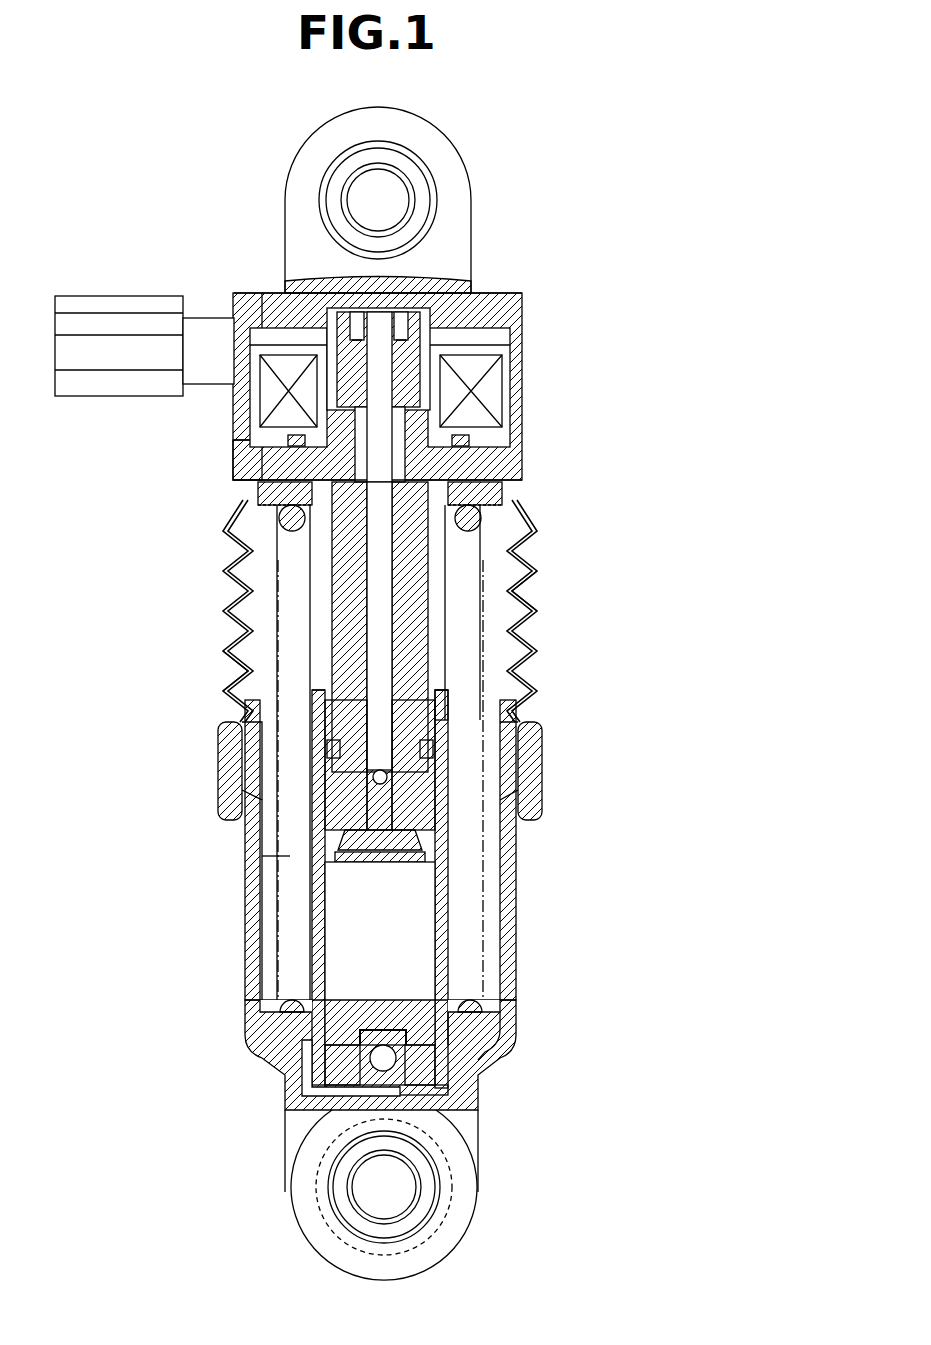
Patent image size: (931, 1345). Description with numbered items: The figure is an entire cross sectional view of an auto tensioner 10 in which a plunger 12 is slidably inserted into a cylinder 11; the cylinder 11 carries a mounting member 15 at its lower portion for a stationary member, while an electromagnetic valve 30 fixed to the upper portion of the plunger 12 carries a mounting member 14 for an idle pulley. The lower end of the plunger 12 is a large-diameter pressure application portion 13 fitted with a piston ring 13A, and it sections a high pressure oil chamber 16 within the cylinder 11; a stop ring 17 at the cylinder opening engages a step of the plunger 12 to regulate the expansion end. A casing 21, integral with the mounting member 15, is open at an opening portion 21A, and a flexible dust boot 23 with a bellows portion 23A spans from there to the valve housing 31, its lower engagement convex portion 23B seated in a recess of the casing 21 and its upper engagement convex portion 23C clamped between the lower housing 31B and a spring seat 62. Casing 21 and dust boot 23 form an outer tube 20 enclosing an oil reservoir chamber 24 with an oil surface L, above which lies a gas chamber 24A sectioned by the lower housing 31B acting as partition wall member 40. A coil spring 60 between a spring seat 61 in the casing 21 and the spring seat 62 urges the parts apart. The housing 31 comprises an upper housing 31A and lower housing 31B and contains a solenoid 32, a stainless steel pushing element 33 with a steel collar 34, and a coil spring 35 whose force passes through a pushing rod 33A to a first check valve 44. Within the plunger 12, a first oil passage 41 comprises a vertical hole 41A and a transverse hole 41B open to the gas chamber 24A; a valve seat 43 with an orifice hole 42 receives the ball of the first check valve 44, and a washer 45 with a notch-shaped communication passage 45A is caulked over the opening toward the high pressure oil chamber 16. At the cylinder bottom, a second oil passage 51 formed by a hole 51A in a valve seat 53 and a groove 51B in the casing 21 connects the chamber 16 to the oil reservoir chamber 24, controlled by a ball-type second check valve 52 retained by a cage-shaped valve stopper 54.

The auto tensioner 10 is at (170, 170).
The mounting member 14 is at (312, 147).
The mounting member 15 is at (322, 1232).
The electromagnetic valve 30 is at (530, 358).
The housing 31 is at (225, 416).
The upper housing 31A is at (505, 300).
The lower housing 31B is at (258, 470).
The solenoid 32 is at (500, 376).
The pushing element 33 is at (492, 415).
The pushing rod 33A is at (480, 615).
The collar 34 is at (505, 332).
The coil spring 35 is at (470, 283).
The partition wall member 40 is at (497, 462).
The dust boot 23 is at (535, 555).
The bellows portion 23A is at (532, 585).
The lower engagement convex portion 23B is at (540, 800).
The upper engagement convex portion 23C is at (497, 490).
The coil spring 60 is at (272, 542).
The spring seat 62 is at (268, 505).
The oil reservoir chamber 24 is at (287, 890).
The gas chamber 24A is at (268, 574).
The plunger 12 is at (305, 620).
The outer tube 20 is at (215, 656).
The stop ring 17 is at (250, 690).
The piston ring 13A is at (232, 752).
The pressure application portion 13 is at (290, 835).
The valve seat 43 is at (222, 808).
The opening portion 21A is at (240, 730).
The casing 21 is at (510, 900).
The oil surface L is at (260, 856).
The cylinder 11 is at (330, 940).
The first oil passage 41 is at (480, 786).
The vertical hole 41A is at (518, 722).
The transverse hole 41B is at (480, 655).
The orifice hole 42 is at (450, 835).
The first check valve 44 is at (480, 762).
The washer 45 is at (355, 862).
The communication passage 45A is at (408, 862).
The high pressure oil chamber 16 is at (450, 940).
The second oil passage 51 is at (455, 1082).
The hole 51A is at (465, 1098).
The groove 51B is at (300, 1045).
The second check valve 52 is at (475, 1020).
The valve seat 53 is at (330, 1070).
The valve stopper 54 is at (395, 1030).
The spring seat 61 is at (282, 1005).